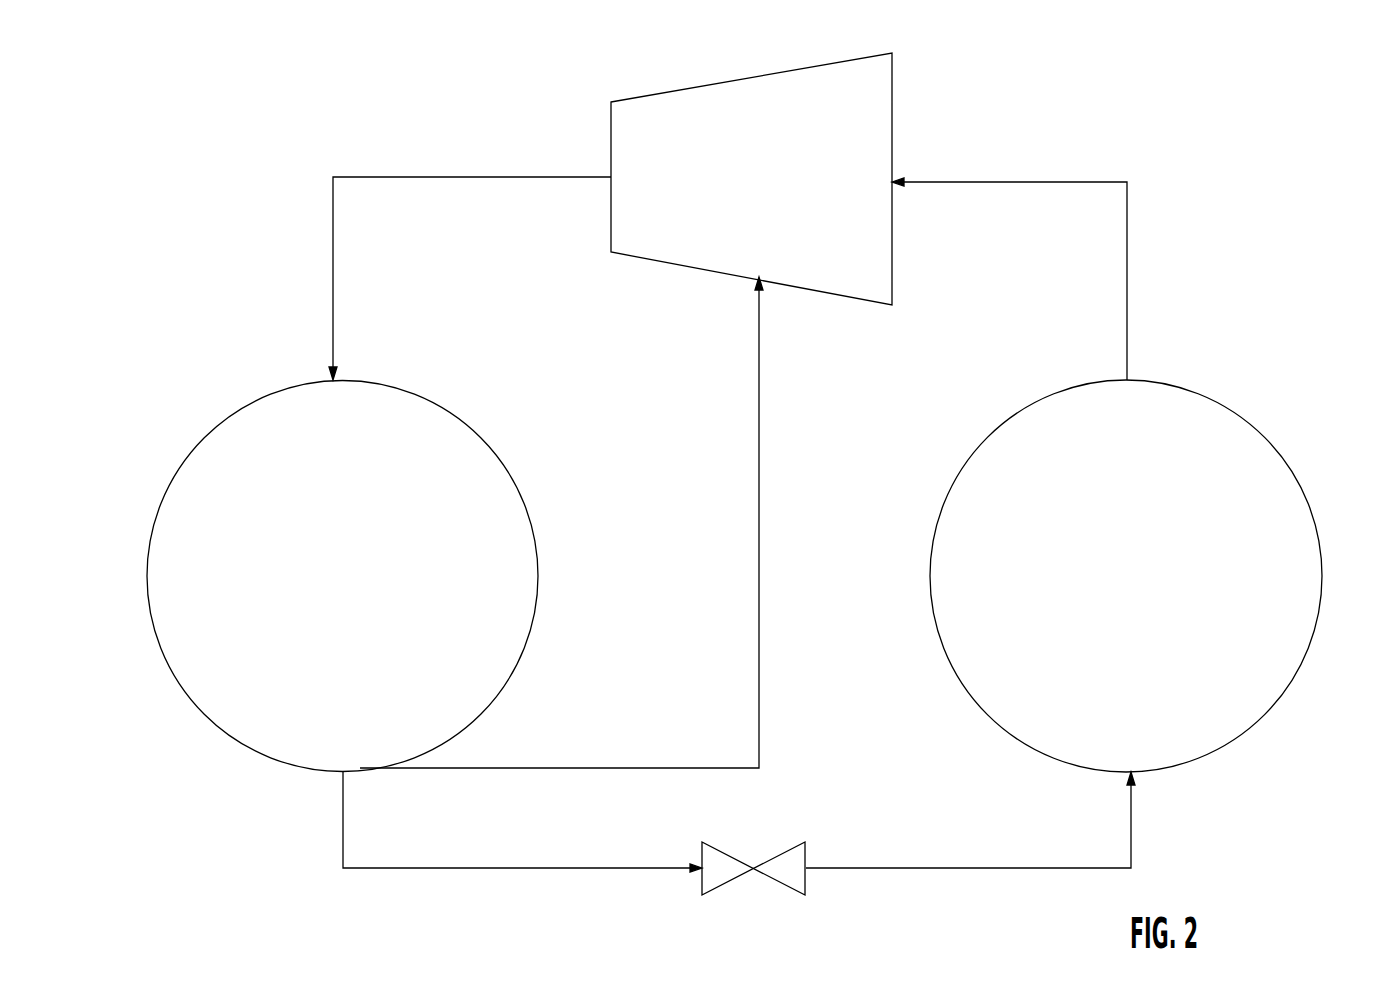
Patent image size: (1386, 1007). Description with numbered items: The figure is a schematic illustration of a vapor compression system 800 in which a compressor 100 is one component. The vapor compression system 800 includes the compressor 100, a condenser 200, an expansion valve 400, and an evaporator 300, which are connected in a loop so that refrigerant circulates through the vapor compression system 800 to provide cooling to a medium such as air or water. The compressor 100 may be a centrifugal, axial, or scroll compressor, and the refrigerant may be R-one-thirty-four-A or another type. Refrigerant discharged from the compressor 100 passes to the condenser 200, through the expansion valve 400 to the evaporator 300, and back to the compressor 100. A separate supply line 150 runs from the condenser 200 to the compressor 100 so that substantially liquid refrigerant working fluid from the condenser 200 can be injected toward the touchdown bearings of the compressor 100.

The compressor 100 is at (736, 195).
The condenser 200 is at (319, 593).
The evaporator 300 is at (1110, 593).
The line 150 is at (760, 515).
The expansion valve 400 is at (806, 880).
The vapor compression system 800 is at (1160, 101).